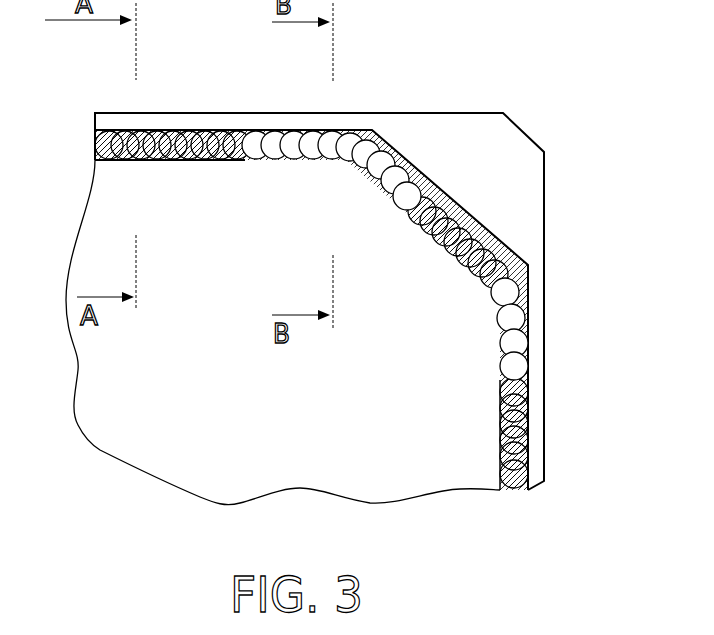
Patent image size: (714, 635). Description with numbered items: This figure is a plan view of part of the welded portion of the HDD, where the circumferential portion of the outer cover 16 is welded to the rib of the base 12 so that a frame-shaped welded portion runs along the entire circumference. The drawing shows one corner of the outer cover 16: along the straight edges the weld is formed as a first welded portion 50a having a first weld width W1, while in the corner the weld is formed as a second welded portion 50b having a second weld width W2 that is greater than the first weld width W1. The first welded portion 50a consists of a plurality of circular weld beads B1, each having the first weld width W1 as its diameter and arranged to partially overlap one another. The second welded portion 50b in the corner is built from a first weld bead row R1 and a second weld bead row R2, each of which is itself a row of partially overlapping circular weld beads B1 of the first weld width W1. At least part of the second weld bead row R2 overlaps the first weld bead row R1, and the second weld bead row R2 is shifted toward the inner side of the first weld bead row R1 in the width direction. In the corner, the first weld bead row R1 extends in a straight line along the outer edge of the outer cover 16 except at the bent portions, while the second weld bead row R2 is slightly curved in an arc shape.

The base 12 is at (544, 193).
The outer cover 16 is at (102, 436).
The first welded portion 50a is at (237, 185).
The second welded portion 50b is at (408, 220).
The weld bead B1 is at (139, 133).
The first weld bead row R1 is at (489, 232).
The second weld bead row R2 is at (380, 172).
The first weld width W1 is at (167, 180).
The second weld width W2 is at (306, 180).